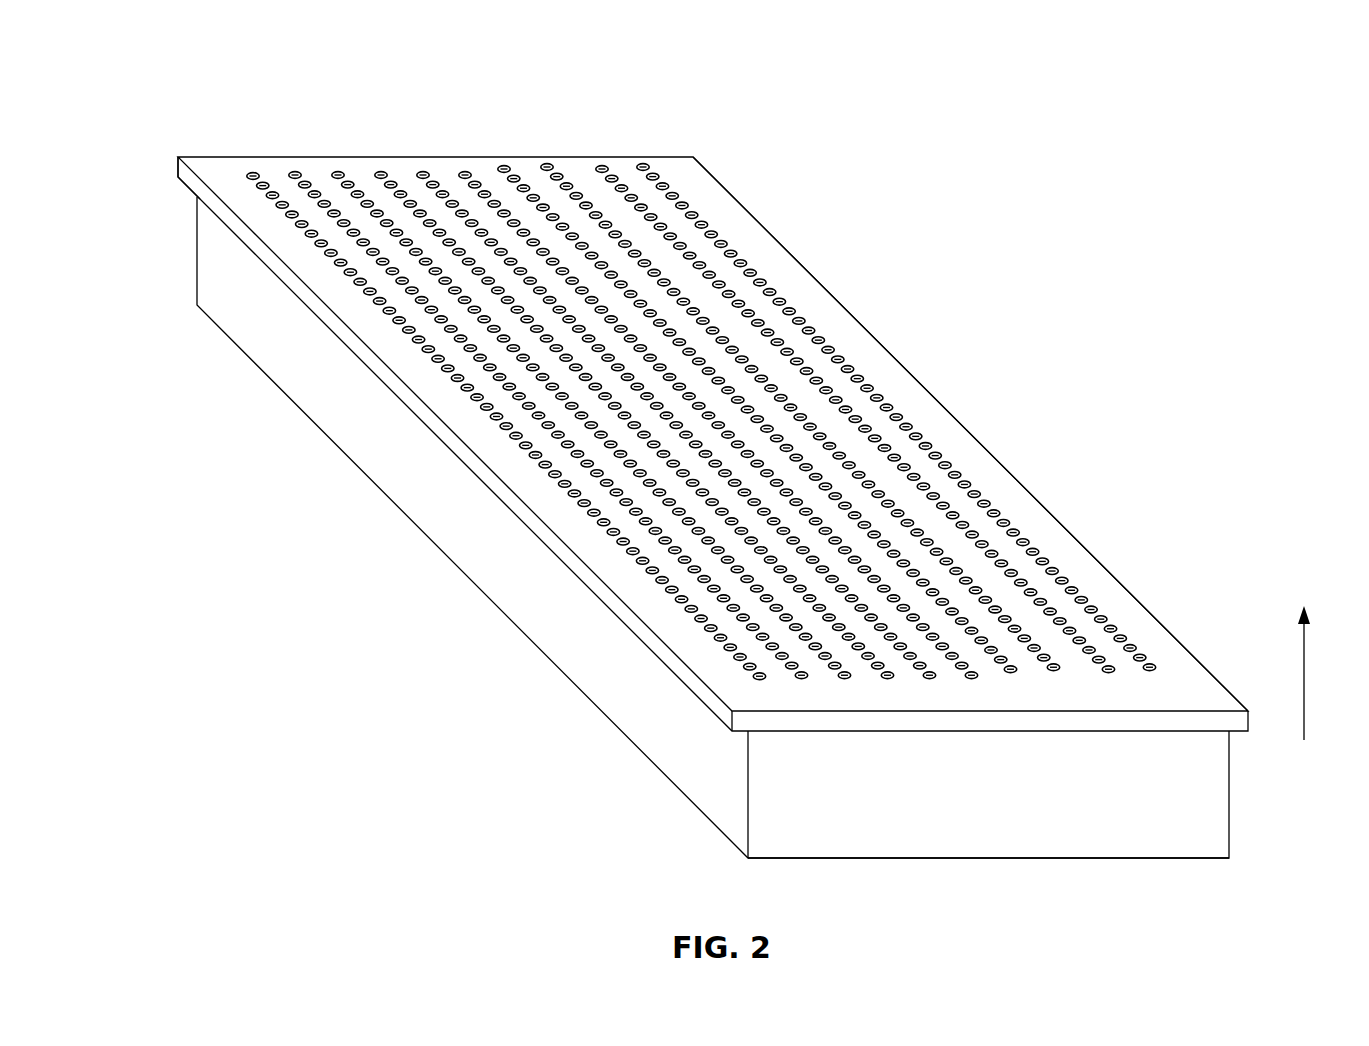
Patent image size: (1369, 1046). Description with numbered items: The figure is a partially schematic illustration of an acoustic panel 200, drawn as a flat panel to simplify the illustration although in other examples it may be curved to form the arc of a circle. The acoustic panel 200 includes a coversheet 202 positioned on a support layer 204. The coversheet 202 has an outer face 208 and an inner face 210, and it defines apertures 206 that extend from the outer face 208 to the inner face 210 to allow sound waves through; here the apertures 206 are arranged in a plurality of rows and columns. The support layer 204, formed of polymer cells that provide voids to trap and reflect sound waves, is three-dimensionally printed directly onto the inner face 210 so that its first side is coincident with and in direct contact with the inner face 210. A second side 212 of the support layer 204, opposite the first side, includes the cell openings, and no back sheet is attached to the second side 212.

The acoustic panel 200 is at (160, 80).
The coversheet 202 is at (748, 182).
The support layer 204 is at (1248, 773).
The apertures 206 is at (945, 460).
The outer face 208 is at (816, 298).
The inner face 210 is at (188, 186).
The second side 212 is at (1030, 860).